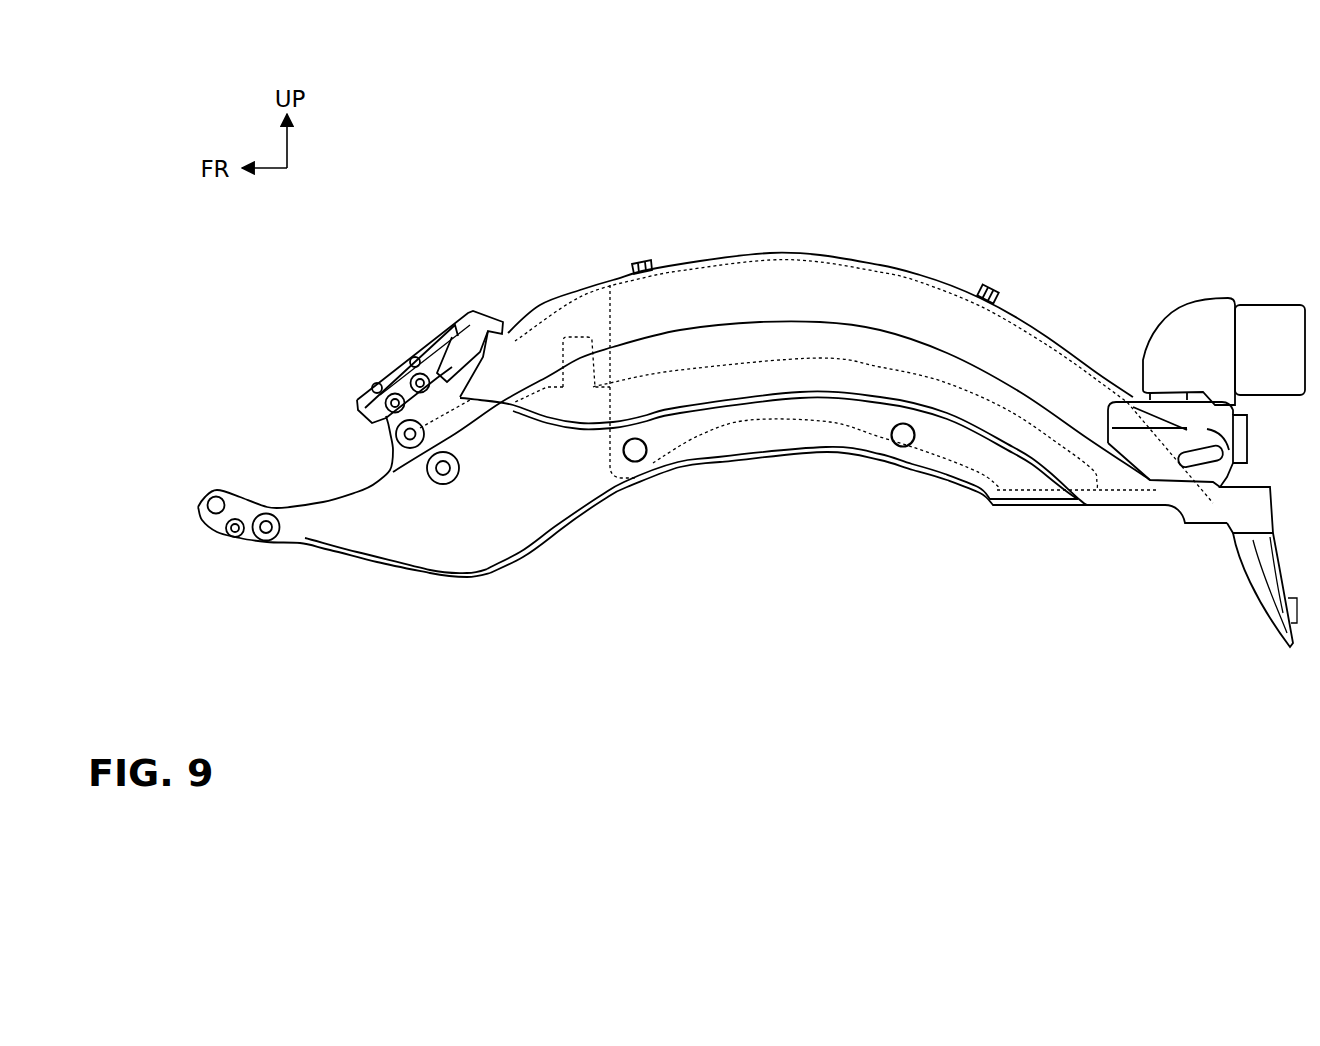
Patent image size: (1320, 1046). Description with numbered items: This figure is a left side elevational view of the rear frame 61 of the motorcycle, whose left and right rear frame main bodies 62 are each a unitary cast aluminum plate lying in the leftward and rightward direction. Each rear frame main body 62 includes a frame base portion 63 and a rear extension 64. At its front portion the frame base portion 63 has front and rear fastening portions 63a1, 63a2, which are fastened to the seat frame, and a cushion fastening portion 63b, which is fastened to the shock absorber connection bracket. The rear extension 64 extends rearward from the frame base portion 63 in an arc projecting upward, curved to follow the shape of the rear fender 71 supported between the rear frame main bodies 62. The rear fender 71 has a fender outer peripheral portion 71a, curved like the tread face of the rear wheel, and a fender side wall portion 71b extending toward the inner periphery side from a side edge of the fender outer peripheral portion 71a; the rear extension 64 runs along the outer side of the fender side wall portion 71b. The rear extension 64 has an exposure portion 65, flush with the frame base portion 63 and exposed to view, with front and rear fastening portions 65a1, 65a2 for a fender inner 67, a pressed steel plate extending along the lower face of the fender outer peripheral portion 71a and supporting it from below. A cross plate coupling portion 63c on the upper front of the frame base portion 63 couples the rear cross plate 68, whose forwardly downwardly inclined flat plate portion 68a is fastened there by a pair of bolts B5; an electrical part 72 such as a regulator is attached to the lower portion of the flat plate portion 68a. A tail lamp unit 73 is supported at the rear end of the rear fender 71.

The rear frame 61 is at (751, 438).
The rear frame main body 62 is at (712, 563).
The frame base portion 63 is at (411, 547).
The front fastening portion 63a1 is at (267, 541).
The rear fastening portion 63a2 is at (396, 436).
The cushion fastening portion 63b is at (443, 485).
The cross plate coupling portion 63c is at (409, 383).
The rear extension 64 is at (717, 473).
The exposure portion 65 is at (883, 502).
The front fastening portion 65a1 is at (634, 462).
The rear fastening portion 65a2 is at (902, 447).
The fender inner 67 is at (818, 273).
The rear cross plate 68 is at (387, 321).
The flat plate portion 68a is at (430, 338).
The rear fender 71 is at (845, 393).
The fender outer peripheral portion 71a is at (945, 305).
The fender side wall portion 71b is at (868, 342).
The electrical part 72 is at (470, 385).
The tail lamp unit 73 is at (1186, 300).
The bolt B5 is at (411, 357).